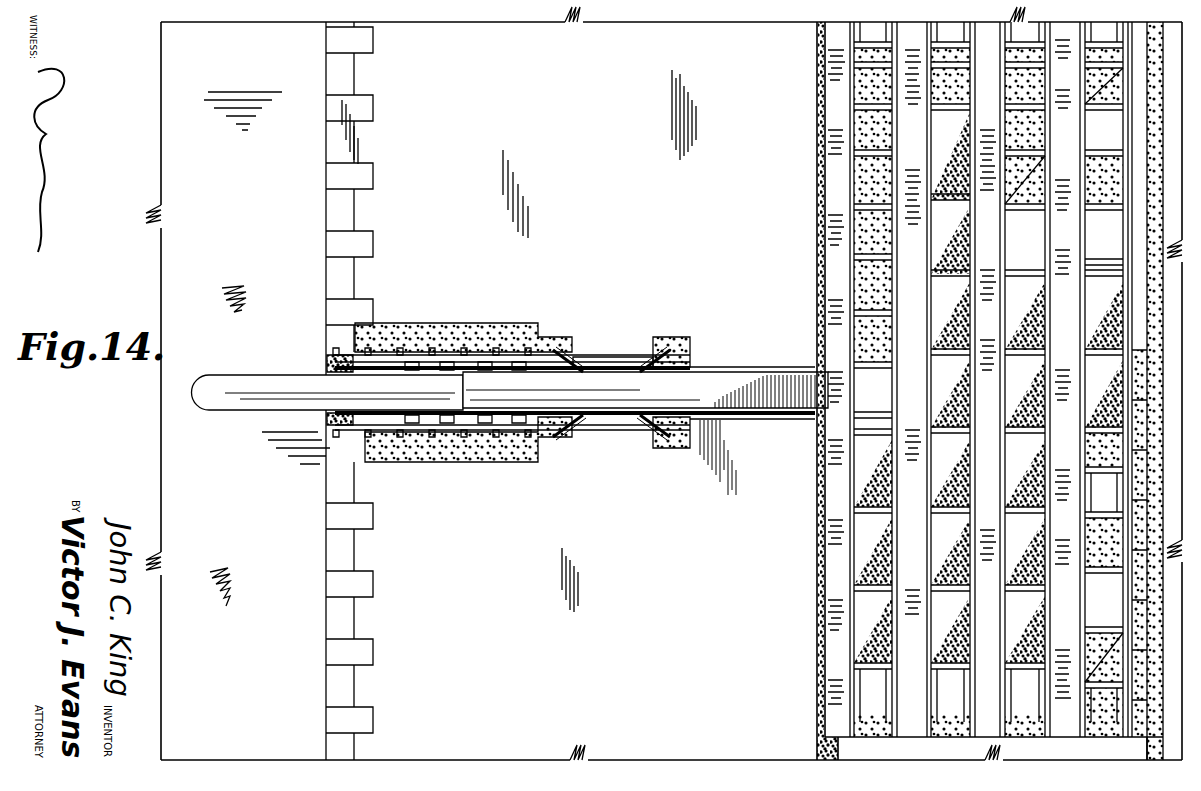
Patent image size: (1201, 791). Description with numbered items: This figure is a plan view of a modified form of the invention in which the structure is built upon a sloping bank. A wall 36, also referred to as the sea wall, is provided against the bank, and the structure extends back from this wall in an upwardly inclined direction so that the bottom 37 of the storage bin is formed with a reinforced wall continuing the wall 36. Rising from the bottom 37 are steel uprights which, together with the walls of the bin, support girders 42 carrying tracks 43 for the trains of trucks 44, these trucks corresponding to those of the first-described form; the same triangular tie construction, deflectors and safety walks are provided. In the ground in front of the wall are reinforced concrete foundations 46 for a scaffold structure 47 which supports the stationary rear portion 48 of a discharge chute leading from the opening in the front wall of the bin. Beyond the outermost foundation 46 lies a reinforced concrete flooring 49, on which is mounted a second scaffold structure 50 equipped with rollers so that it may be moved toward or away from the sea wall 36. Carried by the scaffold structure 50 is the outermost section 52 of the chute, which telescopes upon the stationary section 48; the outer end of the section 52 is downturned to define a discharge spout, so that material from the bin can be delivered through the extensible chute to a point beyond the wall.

The wall 36 is at (818, 538).
The bottom of storage bin 37 is at (1025, 379).
The girders 42 is at (1105, 268).
The tracks 43 is at (982, 379).
The trucks 44 is at (1032, 314).
The reinforced concrete foundations 46 is at (668, 350).
The scaffold structure 47 is at (624, 356).
The stationary rear portion of discharge chute 48 is at (694, 381).
The reinforced concrete flooring 49 is at (452, 462).
The scaffold structure 50 is at (350, 351).
The outermost section of chute 52 is at (258, 405).